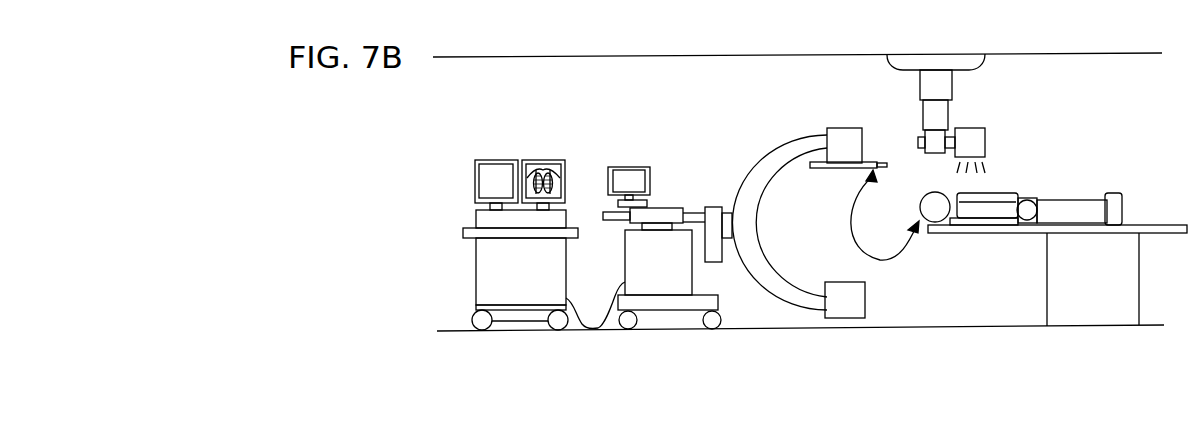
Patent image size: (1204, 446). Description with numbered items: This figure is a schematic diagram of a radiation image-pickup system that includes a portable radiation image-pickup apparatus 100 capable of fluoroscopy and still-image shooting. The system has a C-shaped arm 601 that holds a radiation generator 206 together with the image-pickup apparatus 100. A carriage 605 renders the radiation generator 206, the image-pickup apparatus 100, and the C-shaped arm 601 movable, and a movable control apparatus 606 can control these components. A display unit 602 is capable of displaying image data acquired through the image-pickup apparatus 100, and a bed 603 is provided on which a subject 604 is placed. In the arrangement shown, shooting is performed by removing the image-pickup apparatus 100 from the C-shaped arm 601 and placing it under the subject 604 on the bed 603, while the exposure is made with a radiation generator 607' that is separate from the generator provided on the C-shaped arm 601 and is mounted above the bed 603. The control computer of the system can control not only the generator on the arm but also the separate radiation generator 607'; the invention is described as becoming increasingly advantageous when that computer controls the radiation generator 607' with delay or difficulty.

The image-pickup apparatus 100 is at (978, 227).
The radiation generator 206 is at (845, 319).
The C-shaped arm 601 is at (753, 182).
The display unit 602 is at (497, 160).
The bed 603 is at (1028, 233).
The subject 604 is at (1093, 200).
The carriage 605 is at (670, 303).
The movable control apparatus 606 is at (519, 292).
The radiation generator 607' is at (966, 113).